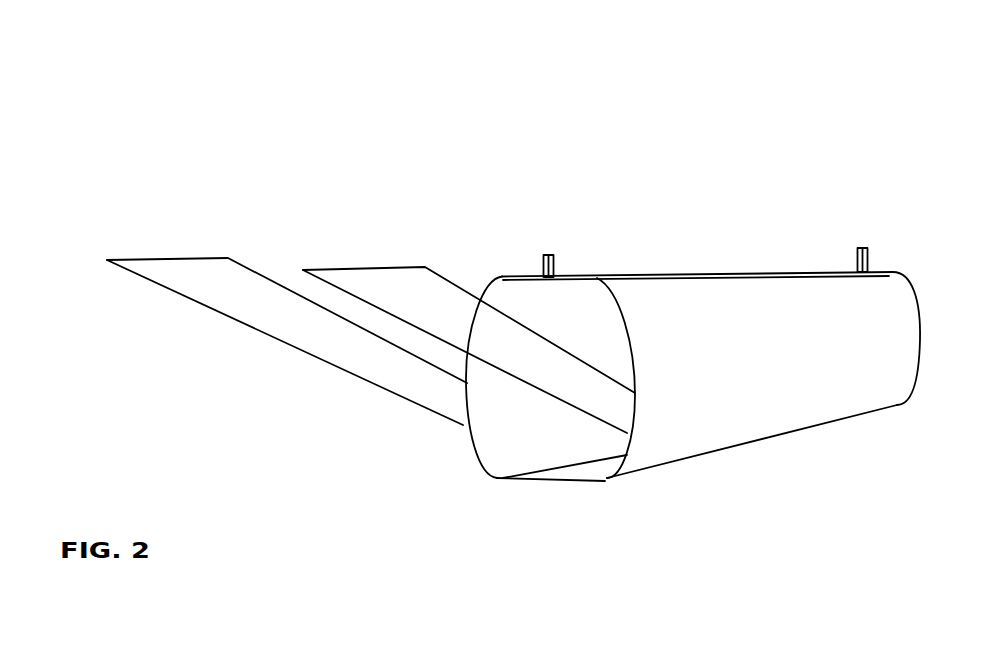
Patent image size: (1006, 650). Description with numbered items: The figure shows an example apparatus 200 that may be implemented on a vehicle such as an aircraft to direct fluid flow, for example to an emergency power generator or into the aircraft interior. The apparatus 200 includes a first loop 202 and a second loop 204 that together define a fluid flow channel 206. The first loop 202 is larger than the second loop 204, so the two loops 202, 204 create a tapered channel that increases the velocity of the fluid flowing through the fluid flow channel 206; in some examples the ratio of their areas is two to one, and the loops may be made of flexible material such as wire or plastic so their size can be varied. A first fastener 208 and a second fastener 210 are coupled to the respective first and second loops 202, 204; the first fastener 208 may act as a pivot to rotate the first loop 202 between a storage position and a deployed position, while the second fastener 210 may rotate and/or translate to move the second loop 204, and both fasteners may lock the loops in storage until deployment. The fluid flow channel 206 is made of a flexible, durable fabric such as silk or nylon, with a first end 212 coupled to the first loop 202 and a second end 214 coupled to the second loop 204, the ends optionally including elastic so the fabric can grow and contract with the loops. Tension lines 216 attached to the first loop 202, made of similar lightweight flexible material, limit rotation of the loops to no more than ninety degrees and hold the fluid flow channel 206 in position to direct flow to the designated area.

The apparatus 200 is at (165, 66).
The first loop 202 is at (490, 469).
The second loop 204 is at (930, 341).
The fluid flow channel 206 is at (790, 427).
The first fastener 208 is at (552, 257).
The second fastener 210 is at (870, 253).
The first end 212 is at (603, 481).
The second end 214 is at (913, 388).
The tension lines 216 is at (449, 336).